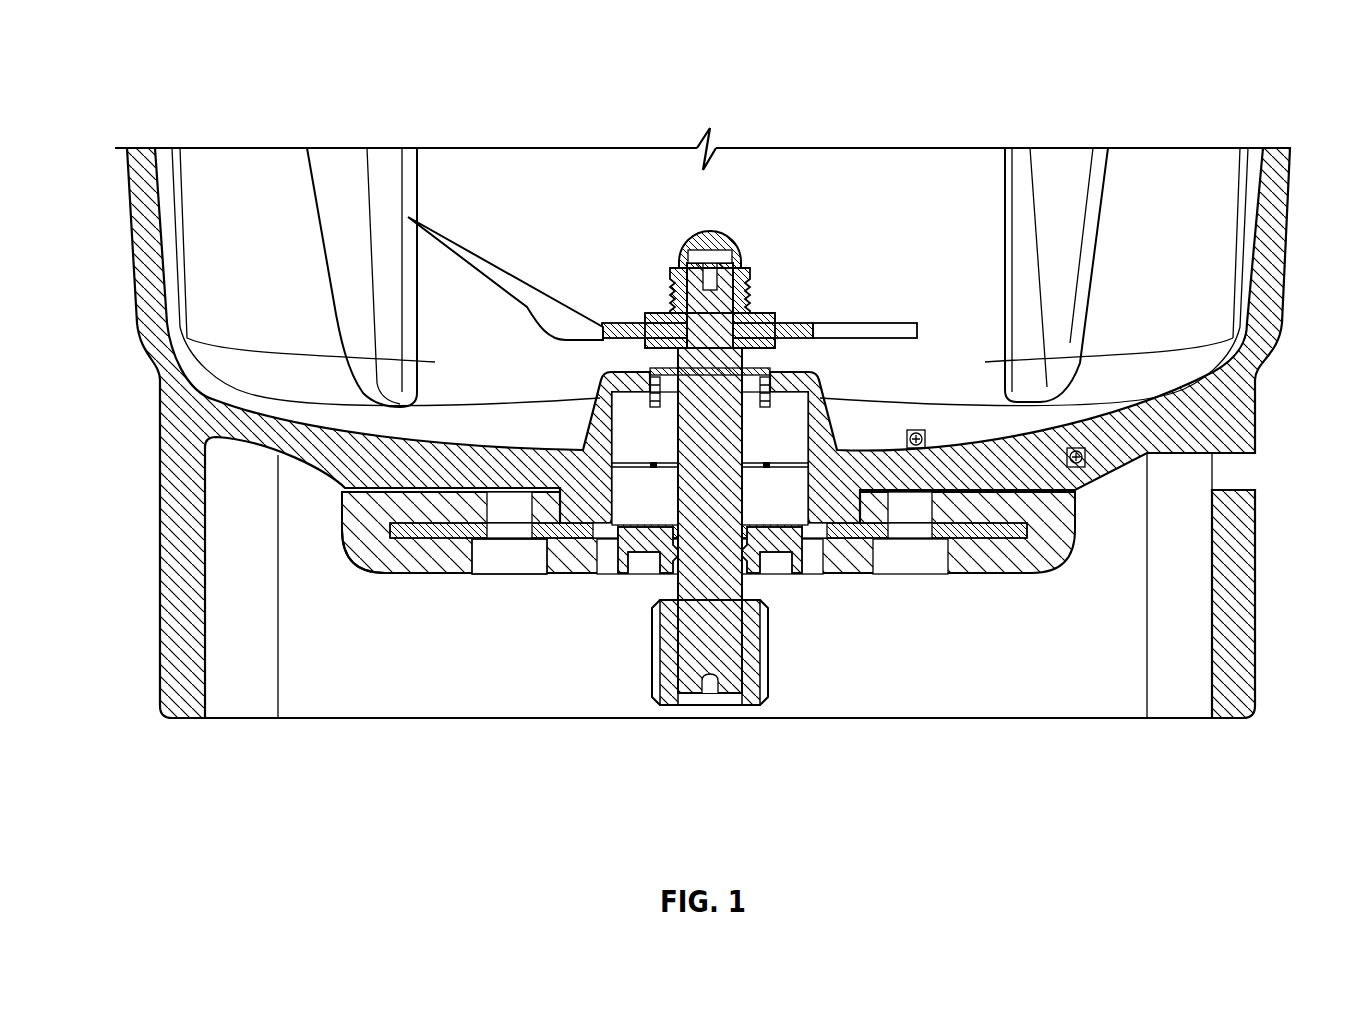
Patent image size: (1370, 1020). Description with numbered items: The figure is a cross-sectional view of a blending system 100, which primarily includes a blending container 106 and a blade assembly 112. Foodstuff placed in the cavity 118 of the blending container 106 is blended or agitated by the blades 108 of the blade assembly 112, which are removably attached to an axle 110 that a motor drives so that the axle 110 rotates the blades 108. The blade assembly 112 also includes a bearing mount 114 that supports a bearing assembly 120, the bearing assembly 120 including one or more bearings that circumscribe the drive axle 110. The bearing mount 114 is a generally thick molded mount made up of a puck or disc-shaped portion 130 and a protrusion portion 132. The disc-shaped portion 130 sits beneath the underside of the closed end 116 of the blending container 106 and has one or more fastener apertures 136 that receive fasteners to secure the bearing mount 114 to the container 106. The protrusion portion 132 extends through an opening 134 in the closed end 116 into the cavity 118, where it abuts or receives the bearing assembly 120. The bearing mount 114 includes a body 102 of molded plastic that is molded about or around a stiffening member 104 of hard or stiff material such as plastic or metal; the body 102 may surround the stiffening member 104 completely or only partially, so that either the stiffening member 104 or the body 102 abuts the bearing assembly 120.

The blending system 100 is at (172, 65).
The body 102 is at (1065, 505).
The stiffening member 104 is at (990, 527).
The blending container 106 is at (1270, 277).
The blades 108 is at (525, 287).
The axle 110 is at (715, 364).
The blade assembly 112 is at (731, 214).
The bearing mount 114 is at (302, 557).
The closed end 116 is at (1118, 460).
The cavity 118 is at (1194, 170).
The bearing assembly 120 is at (770, 510).
The disc-shaped portion 130 is at (408, 560).
The protrusion portion 132 is at (627, 387).
The opening 134 is at (550, 447).
The fastener apertures 136 is at (510, 560).